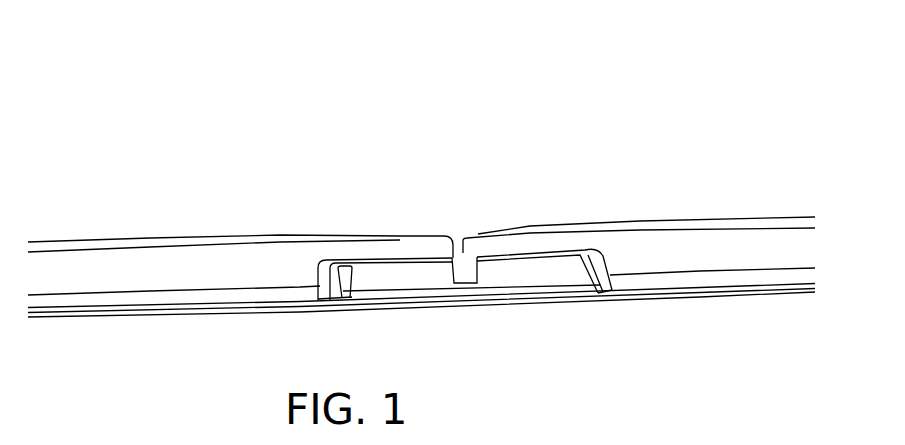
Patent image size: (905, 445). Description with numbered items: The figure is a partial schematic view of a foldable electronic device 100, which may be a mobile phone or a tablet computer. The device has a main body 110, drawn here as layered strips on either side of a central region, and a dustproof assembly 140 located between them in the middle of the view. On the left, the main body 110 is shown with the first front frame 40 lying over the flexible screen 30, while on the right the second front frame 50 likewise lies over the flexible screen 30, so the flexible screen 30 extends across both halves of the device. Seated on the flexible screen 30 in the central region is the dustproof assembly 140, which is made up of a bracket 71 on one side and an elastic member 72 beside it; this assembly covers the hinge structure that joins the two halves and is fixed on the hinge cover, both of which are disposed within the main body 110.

The foldable electronic device 100 is at (440, 38).
The main body 110 is at (73, 150).
The dustproof assembly 140 is at (425, 162).
The first front frame 40 is at (207, 266).
The flexible screen 30 is at (297, 306).
The second front frame 50 is at (645, 253).
The bracket 71 is at (377, 259).
The elastic member 72 is at (513, 272).